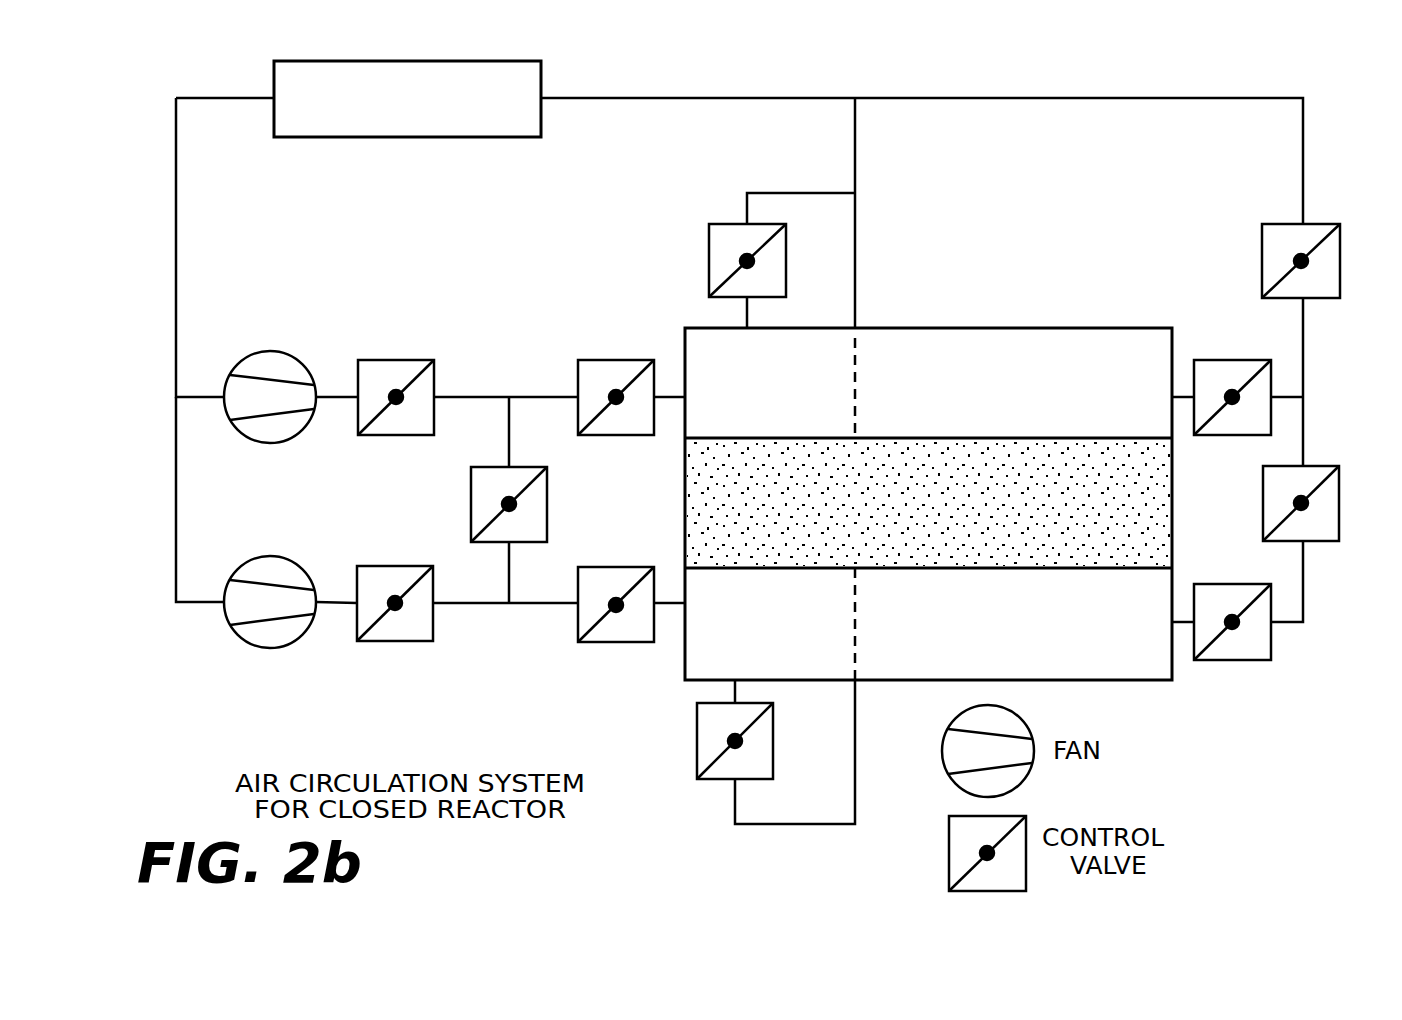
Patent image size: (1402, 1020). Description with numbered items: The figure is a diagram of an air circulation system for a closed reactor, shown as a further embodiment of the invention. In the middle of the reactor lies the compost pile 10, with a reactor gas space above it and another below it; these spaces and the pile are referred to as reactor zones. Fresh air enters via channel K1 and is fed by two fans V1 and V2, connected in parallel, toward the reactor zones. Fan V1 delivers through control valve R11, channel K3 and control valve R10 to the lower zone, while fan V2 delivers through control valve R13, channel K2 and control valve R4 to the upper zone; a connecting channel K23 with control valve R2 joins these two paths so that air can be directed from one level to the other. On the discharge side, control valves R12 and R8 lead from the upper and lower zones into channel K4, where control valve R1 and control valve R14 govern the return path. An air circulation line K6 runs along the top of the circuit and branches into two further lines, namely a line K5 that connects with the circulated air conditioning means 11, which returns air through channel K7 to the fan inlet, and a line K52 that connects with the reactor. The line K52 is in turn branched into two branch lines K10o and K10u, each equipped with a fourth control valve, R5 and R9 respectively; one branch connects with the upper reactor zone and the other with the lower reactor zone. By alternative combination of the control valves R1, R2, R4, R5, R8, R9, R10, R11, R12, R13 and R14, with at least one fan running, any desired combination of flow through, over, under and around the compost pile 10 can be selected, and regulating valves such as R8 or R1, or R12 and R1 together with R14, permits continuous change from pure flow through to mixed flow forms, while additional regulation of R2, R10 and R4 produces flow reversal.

The compost pile 10 is at (953, 437).
The circulated air conditioning means 11 is at (541, 77).
The channel K1 is at (176, 320).
The channel K2 is at (479, 397).
The channel K3 is at (474, 603).
The channel K4 is at (1303, 583).
The line K5 is at (642, 98).
The air circulation line K6 is at (1058, 98).
The air channel K7 is at (234, 98).
The connecting channel K23 is at (508, 434).
The line K52 is at (855, 165).
The branch line K10o is at (788, 192).
The branch line K10u is at (787, 824).
The fan V1 is at (245, 640).
The fan V2 is at (280, 352).
The control valve R1 is at (1318, 466).
The control valve R2 is at (547, 507).
The control valve R4 is at (617, 360).
The control valve R5 is at (709, 267).
The control valve R8 is at (1223, 660).
The control valve R9 is at (773, 748).
The control valve R10 is at (633, 642).
The control valve R11 is at (390, 641).
The control valve R12 is at (1228, 360).
The control valve R13 is at (400, 360).
The control valve R14 is at (1312, 222).